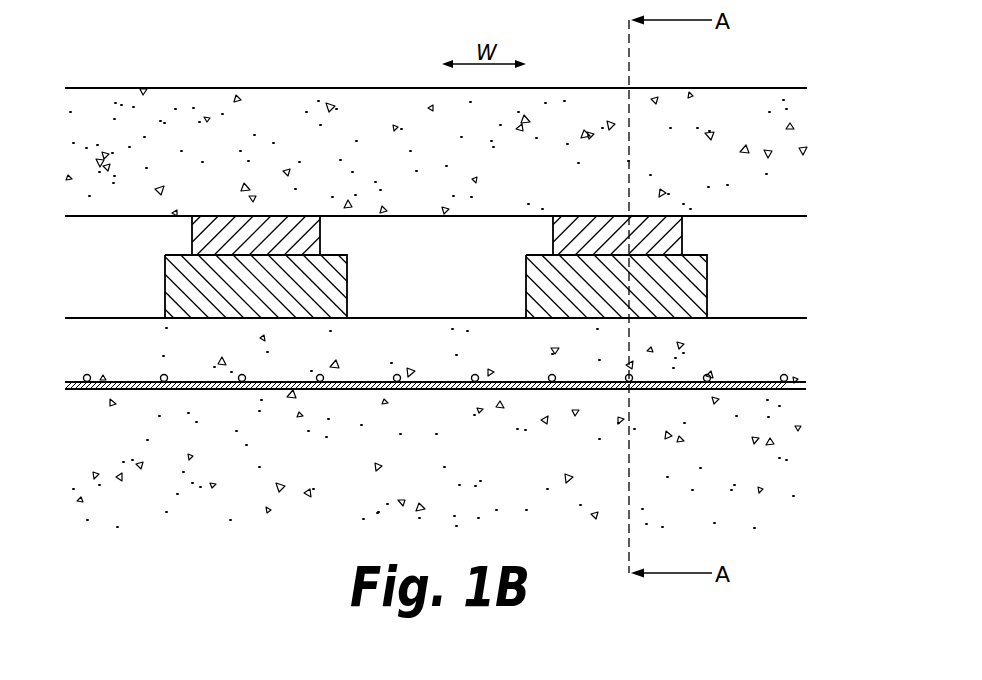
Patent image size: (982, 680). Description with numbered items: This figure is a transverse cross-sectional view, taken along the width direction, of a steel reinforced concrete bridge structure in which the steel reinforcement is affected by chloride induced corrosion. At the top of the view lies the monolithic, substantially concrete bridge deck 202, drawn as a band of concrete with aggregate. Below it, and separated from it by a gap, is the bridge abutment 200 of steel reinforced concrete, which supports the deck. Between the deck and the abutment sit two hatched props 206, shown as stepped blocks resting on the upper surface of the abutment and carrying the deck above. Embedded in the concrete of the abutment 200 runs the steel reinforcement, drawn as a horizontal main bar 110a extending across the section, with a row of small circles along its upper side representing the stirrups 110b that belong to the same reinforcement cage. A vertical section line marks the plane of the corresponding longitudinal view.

The bridge deck 202 is at (190, 130).
The prop 206 is at (202, 291).
The main bar 110a is at (738, 372).
The stirrup 110b is at (405, 348).
The abutment 200 is at (204, 480).